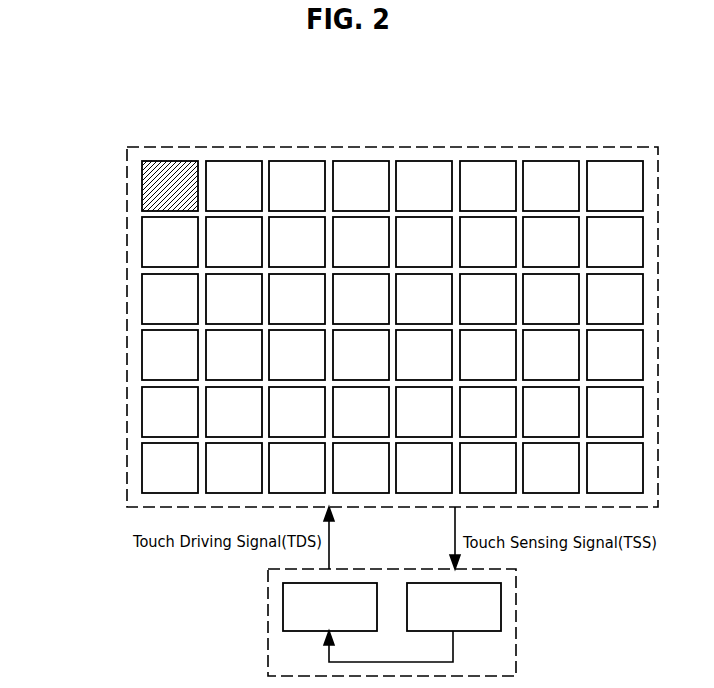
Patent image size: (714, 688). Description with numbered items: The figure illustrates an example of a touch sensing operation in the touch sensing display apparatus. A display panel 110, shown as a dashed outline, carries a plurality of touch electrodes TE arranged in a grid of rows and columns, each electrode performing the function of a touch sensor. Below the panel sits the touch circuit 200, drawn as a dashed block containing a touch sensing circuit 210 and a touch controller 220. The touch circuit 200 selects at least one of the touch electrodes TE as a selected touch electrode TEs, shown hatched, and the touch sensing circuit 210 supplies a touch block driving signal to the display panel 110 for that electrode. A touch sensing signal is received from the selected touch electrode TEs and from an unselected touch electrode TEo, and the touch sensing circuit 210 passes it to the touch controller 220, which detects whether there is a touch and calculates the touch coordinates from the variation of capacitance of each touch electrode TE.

The display panel 110 is at (346, 302).
The touch electrodes TE is at (338, 327).
The selected touch electrode TEs is at (142, 186).
The unselected touch electrode TEo is at (142, 243).
The touch circuit 200 is at (419, 622).
The touch controller 220 is at (316, 617).
The touch sensing circuit 210 is at (439, 617).